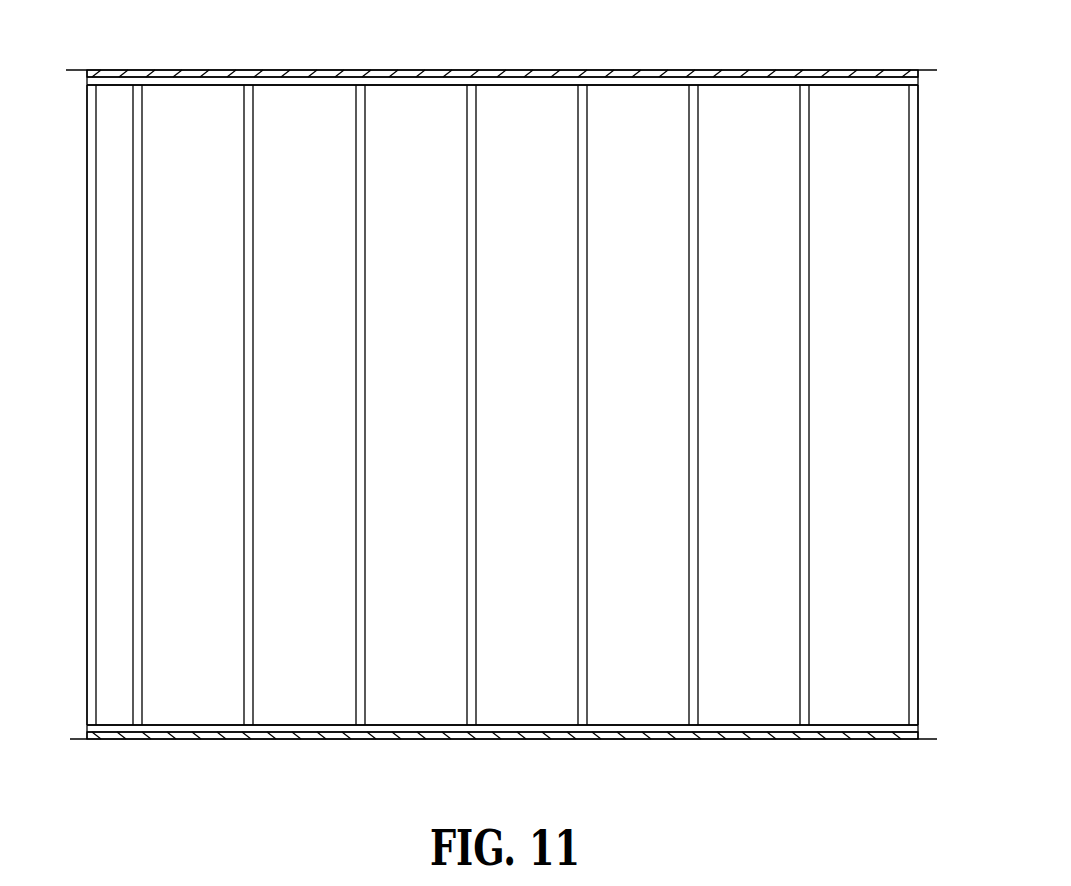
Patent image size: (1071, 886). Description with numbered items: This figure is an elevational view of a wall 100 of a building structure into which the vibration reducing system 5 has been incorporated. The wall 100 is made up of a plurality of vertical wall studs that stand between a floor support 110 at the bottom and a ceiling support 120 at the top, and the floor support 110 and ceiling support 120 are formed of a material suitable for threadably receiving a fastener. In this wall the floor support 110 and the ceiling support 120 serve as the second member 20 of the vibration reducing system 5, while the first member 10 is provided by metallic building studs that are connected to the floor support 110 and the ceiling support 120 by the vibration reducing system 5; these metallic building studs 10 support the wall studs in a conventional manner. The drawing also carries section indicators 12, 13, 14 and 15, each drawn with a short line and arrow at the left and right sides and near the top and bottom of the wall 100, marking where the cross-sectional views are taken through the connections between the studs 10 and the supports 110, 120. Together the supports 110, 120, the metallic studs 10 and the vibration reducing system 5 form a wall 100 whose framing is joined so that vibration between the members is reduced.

The vibration reducing system 5 is at (790, 28).
The first member 10 is at (647, 742).
The section line 12 is at (53, 633).
The section line 13 is at (52, 193).
The section line 14 is at (554, 48).
The section line 15 is at (554, 673).
The second member 20 is at (655, 72).
The wall 100 is at (185, 54).
The floor support 110 is at (218, 742).
The ceiling support 120 is at (258, 70).